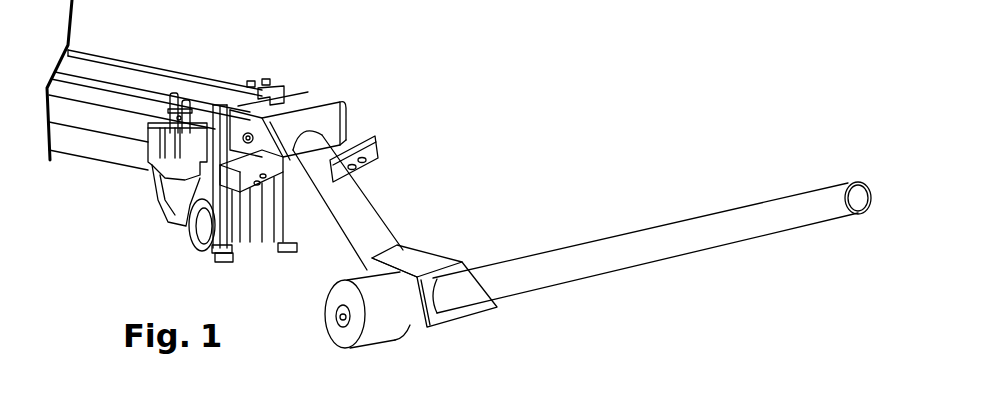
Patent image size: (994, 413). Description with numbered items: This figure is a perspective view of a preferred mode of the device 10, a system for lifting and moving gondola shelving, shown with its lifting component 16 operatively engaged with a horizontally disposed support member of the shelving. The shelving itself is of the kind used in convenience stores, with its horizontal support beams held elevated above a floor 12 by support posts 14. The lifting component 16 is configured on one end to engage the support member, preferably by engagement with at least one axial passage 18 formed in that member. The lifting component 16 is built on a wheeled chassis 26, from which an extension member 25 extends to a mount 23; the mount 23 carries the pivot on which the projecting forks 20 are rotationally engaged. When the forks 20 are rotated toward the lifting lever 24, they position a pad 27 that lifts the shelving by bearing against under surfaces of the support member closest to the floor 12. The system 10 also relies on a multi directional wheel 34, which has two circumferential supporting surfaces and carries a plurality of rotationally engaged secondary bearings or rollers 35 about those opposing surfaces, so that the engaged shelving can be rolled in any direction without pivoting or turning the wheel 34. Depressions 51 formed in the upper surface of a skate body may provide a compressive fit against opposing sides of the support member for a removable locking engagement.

The device 10 is at (452, 112).
The floor 12 is at (132, 92).
The support posts 14 is at (232, 230).
The lifting component 16 is at (443, 201).
The axial passage 18 is at (283, 102).
The projecting forks 20 is at (315, 108).
The mount 23 is at (315, 128).
The lifting lever 24 is at (672, 232).
The extension member 25 is at (343, 218).
The wheeled chassis 26 is at (430, 255).
The pad 27 is at (362, 162).
The multi directional wheel 34 is at (198, 222).
The rollers 35 is at (202, 220).
The depressions 51 is at (177, 162).